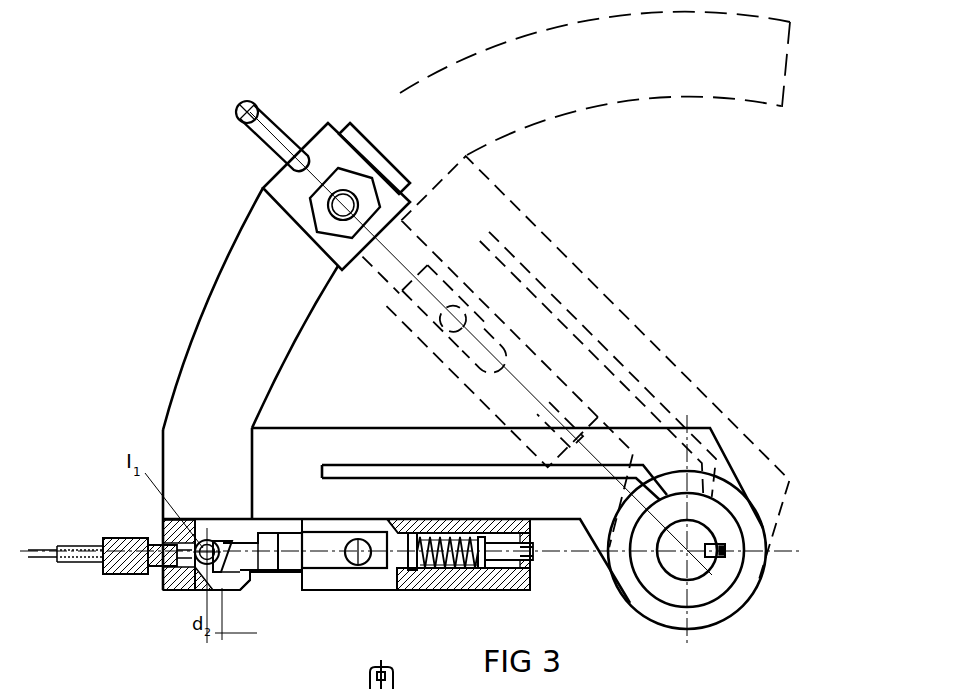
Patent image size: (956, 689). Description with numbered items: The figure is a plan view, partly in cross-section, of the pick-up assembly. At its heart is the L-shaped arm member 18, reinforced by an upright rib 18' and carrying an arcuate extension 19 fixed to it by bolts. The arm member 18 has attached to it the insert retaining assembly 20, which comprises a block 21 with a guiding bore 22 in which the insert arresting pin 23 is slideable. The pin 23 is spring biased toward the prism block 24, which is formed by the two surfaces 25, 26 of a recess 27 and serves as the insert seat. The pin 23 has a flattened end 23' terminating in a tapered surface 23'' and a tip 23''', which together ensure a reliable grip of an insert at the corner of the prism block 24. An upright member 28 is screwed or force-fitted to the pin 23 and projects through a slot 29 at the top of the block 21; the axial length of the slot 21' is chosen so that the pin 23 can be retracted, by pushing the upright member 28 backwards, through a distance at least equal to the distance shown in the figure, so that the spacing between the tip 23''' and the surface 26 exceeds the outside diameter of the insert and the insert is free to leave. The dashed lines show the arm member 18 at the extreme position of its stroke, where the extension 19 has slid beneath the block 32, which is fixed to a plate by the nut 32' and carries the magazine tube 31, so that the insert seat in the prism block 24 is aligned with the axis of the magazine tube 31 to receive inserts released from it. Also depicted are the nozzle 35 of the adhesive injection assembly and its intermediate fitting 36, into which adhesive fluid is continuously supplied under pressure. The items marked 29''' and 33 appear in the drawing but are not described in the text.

The L-shaped arm member 18 is at (718, 549).
The upright rib 18' is at (494, 490).
The arcuate extension 19 is at (190, 405).
The insert retaining assembly 20 is at (417, 603).
The block 21 is at (452, 586).
The slot 21' is at (447, 592).
The guiding bore 22 is at (453, 537).
The insert arresting pin 23 is at (271, 588).
The flattened end 23' is at (276, 593).
The tapered surface 23'' is at (246, 557).
The tip 23''' is at (195, 624).
The prism block 24 is at (163, 590).
The surface 25 is at (220, 540).
The surface 26 is at (202, 587).
The recess 27 is at (240, 584).
The upright member 28 is at (355, 568).
The slot 29 is at (344, 528).
The rod end fitting 29''' is at (418, 674).
The magazine tube 31 is at (332, 222).
The block 32 is at (303, 196).
The nut 32' is at (292, 208).
The guide pin 33 is at (267, 133).
The nozzle 35 is at (148, 540).
The intermediate fitting 36 is at (107, 573).